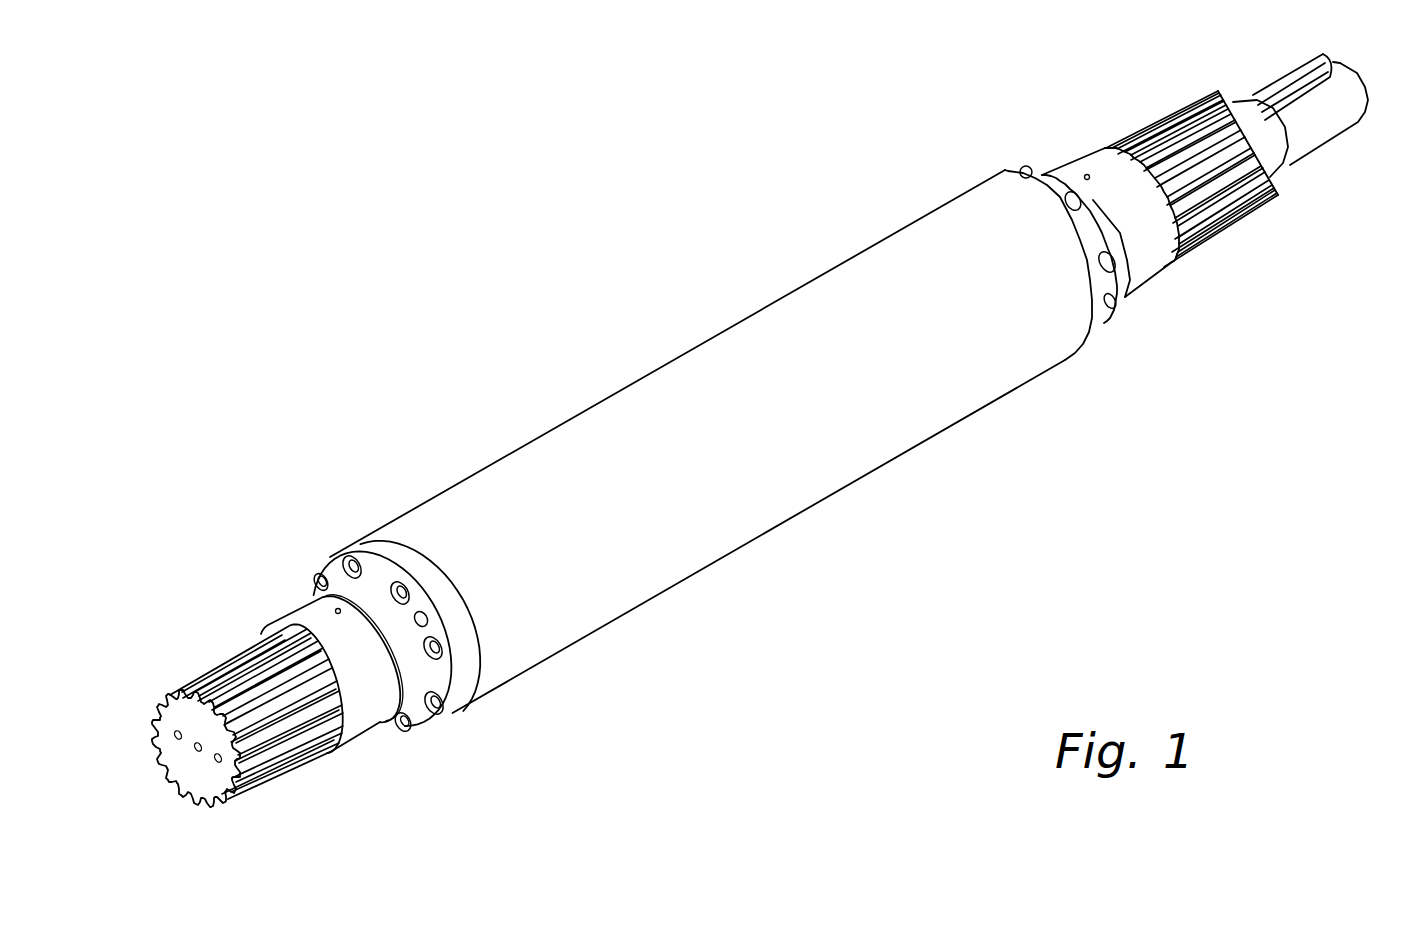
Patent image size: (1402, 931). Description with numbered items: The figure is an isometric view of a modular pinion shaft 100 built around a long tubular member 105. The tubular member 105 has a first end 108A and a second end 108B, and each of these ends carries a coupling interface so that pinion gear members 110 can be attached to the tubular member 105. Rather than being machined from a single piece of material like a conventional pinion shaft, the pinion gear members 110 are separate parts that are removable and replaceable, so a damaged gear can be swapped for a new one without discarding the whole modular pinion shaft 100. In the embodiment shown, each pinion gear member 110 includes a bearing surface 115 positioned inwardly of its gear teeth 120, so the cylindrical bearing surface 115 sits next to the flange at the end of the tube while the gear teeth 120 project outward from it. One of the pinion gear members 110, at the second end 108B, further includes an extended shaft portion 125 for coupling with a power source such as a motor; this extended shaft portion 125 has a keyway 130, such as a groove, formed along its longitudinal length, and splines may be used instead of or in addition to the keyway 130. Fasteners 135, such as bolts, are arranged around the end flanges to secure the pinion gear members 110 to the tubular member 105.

The modular pinion shaft 100 is at (498, 254).
The tubular member 105 is at (680, 353).
The first end 108A is at (382, 533).
The second end 108B is at (960, 192).
The pinion gear member 110 is at (188, 626).
The bearing surface 115 is at (358, 725).
The gear teeth 120 is at (255, 785).
The extended shaft portion 125 is at (1325, 140).
The keyway 130 is at (1283, 85).
The fasteners 135 is at (456, 703).